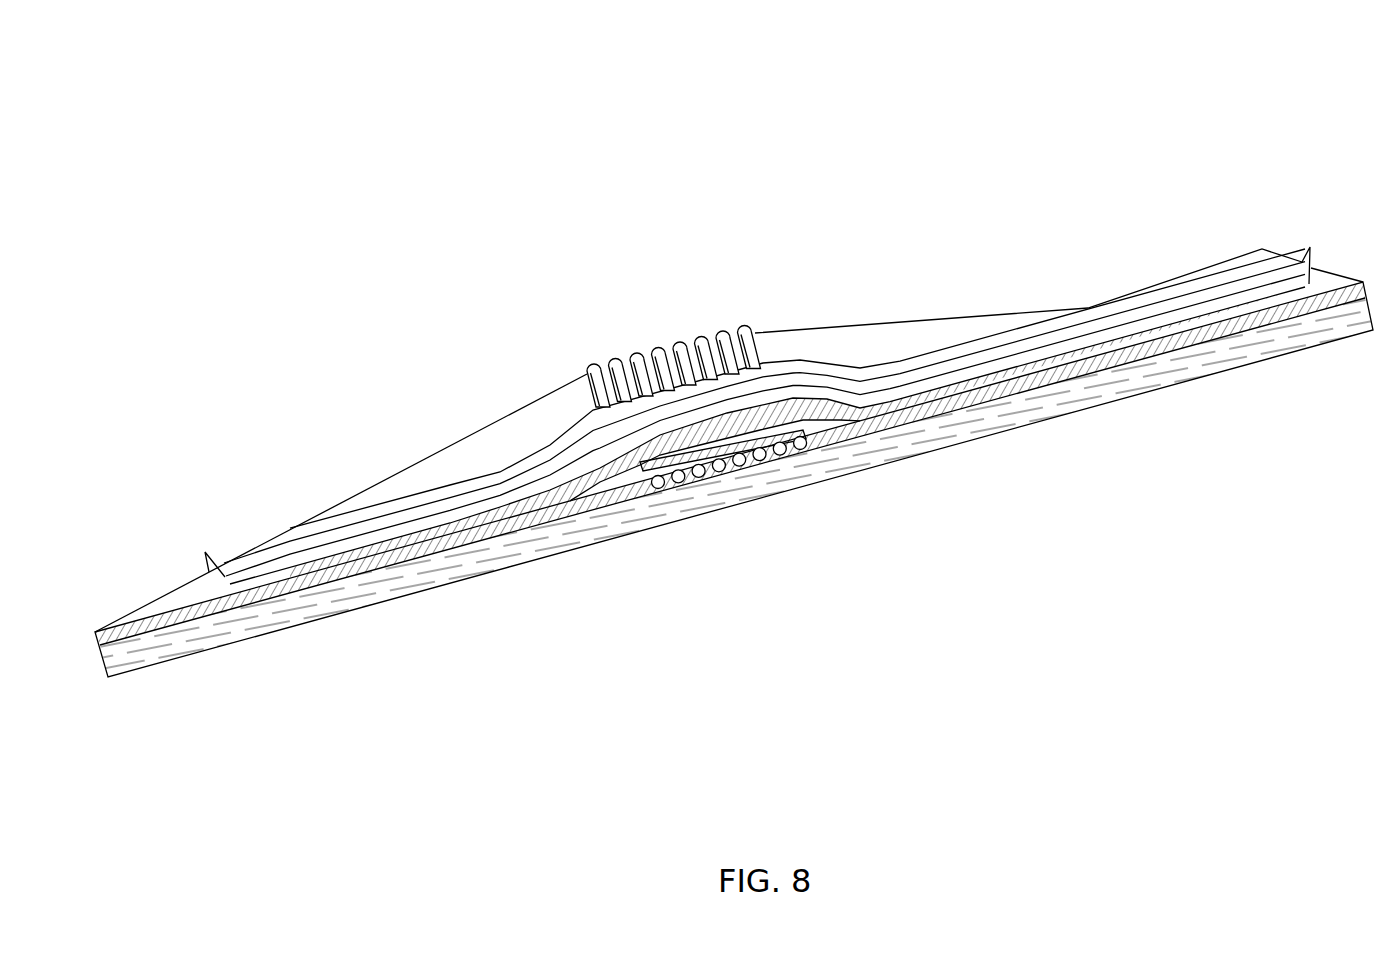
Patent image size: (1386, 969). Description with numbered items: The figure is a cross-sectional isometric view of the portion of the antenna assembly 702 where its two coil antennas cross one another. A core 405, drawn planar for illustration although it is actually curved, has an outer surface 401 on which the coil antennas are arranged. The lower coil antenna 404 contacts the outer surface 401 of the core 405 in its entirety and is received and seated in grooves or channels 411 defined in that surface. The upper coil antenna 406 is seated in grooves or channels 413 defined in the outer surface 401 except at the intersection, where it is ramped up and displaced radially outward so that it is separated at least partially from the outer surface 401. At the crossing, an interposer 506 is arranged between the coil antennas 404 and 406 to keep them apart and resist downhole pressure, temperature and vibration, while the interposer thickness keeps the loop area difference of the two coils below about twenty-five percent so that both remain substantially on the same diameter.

The antenna assembly 702 is at (840, 86).
The outer surface 401 is at (623, 480).
The coil antenna 404 is at (824, 441).
The core 405 is at (1127, 383).
The coil antenna 406 is at (482, 537).
The grooves or channels 411 is at (707, 518).
The grooves or channels 413 is at (316, 581).
The interposer 506 is at (757, 462).